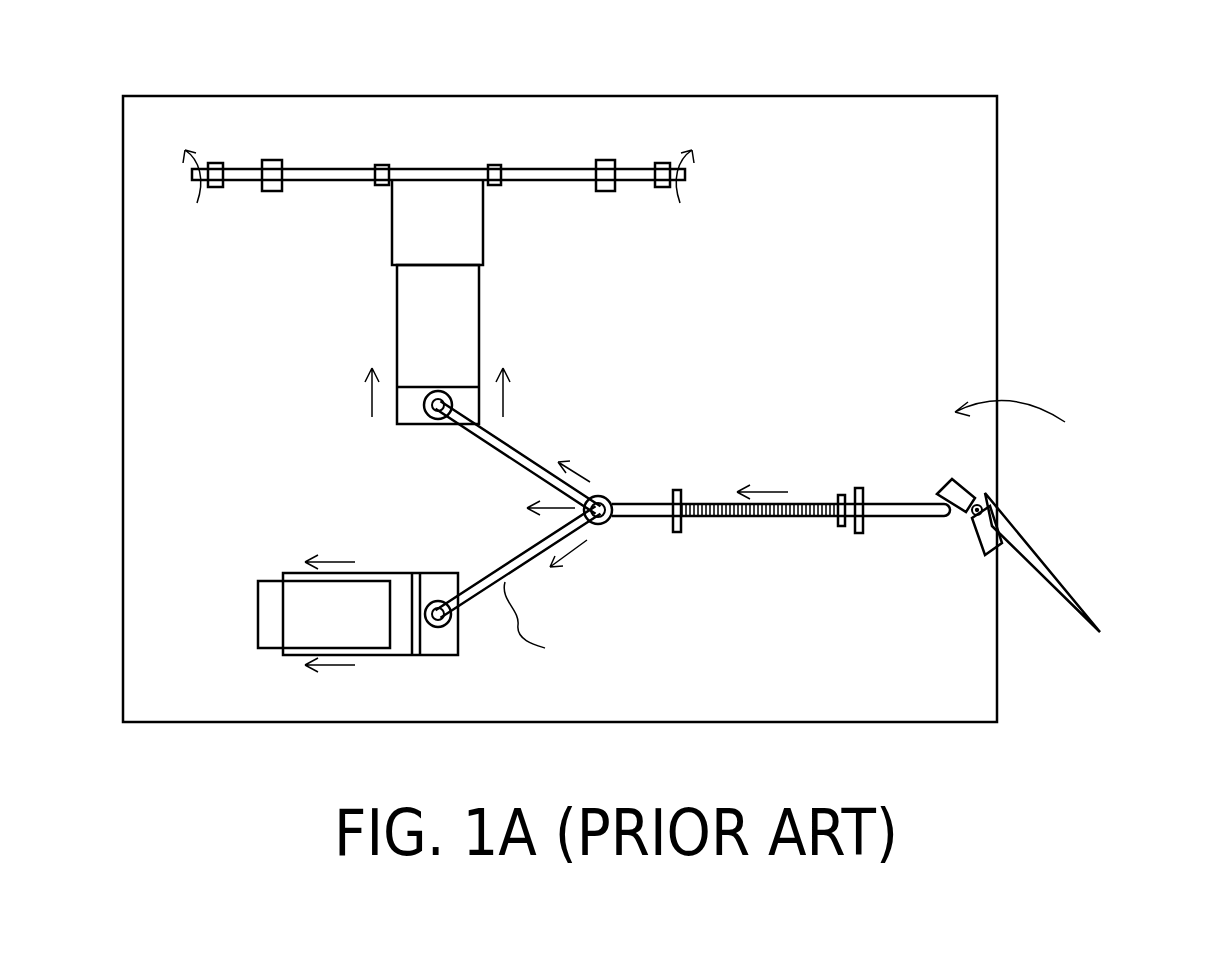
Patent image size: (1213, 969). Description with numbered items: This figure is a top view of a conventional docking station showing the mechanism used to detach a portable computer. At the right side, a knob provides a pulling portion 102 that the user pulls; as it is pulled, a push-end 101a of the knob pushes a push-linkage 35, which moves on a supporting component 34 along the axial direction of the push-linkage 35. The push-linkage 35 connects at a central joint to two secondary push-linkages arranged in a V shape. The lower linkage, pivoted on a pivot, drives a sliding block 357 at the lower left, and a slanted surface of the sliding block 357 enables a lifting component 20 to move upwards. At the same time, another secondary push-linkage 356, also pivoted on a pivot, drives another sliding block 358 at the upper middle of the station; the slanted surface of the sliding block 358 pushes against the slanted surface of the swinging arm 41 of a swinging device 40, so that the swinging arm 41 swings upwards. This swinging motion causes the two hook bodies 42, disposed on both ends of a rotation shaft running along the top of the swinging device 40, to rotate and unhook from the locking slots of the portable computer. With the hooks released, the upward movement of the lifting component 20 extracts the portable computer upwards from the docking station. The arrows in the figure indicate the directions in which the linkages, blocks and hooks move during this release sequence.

The lifting component 20 is at (273, 619).
The supporting component 34 is at (677, 488).
The push-linkage 35 is at (897, 517).
The swinging device 40 is at (342, 150).
The swinging arm 41 is at (473, 227).
The hook body 42 is at (214, 162).
The push-end 101a is at (950, 480).
The pulling portion 102 is at (1048, 578).
The secondary push-linkage 356 is at (522, 450).
The sliding block 357 is at (400, 575).
The sliding block 358 is at (413, 293).